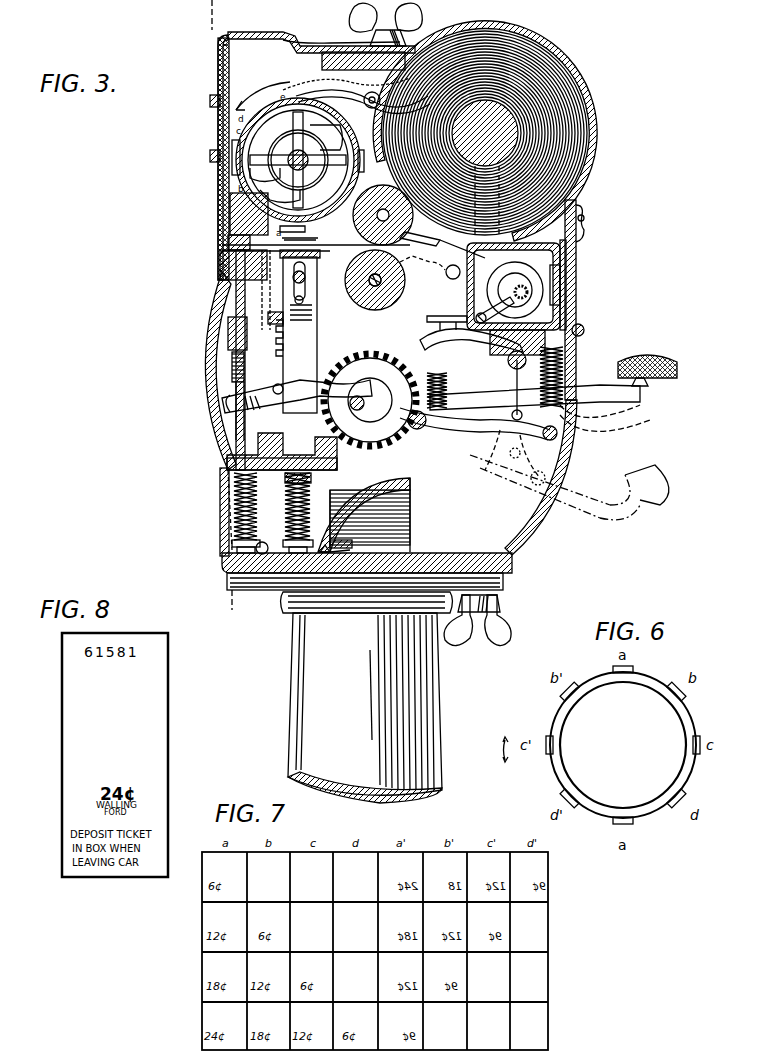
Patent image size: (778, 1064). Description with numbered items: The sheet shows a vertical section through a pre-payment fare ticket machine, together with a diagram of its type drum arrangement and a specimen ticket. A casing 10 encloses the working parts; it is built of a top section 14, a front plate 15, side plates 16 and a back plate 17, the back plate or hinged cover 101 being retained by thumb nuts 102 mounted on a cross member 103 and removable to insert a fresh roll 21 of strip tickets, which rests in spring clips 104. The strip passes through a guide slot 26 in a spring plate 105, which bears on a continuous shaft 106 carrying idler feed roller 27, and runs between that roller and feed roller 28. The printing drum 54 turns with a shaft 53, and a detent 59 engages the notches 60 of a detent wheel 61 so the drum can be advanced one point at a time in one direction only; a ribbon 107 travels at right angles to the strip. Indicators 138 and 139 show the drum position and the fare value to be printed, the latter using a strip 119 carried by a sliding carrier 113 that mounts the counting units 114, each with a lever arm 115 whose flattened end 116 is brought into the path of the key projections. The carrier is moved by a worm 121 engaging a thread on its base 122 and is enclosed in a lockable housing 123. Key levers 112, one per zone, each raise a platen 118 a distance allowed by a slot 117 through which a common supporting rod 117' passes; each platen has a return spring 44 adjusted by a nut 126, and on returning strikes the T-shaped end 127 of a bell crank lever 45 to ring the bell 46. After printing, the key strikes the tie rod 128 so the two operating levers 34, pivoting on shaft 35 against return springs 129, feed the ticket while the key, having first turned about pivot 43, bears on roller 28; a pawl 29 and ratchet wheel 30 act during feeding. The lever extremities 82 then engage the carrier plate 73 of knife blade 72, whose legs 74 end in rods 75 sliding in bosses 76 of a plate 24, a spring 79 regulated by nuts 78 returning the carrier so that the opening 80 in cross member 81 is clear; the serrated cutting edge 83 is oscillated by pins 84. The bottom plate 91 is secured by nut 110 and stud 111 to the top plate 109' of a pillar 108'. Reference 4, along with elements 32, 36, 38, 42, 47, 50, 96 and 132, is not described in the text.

The section line 4 is at (218, 305).
The casing 10 is at (220, 472).
The top section 14 is at (290, 34).
The front plate 15 is at (200, 323).
The side plates 16 is at (218, 46).
The back plate 17 is at (576, 350).
The roll 21 is at (588, 160).
The plate 24 is at (288, 485).
The guide slot 26 is at (442, 241).
The feed roller 27 is at (306, 229).
The feed roller 28 is at (441, 272).
The pawl 29 is at (297, 390).
The ratchet wheel 30 is at (368, 440).
The pinion 32 is at (369, 278).
The operating levers 34 is at (455, 433).
The shaft 35 is at (425, 430).
The spring 36 is at (432, 390).
The rack teeth 38 is at (276, 326).
The plate 42 is at (222, 245).
The pivot 43 is at (512, 457).
The spring 44 is at (310, 496).
The bell crank lever 45 is at (339, 529).
The bell 46 is at (445, 505).
The gear 47 is at (380, 445).
The ratchet disc 50 is at (365, 268).
The shaft 53 is at (236, 143).
The printing drum 54 is at (345, 142).
The detent 59 is at (372, 96).
The notch 60 is at (338, 145).
The detent wheel 61 is at (312, 95).
The knife blade 72 is at (232, 300).
The carrier plate 73 is at (230, 350).
The legs 74 is at (236, 378).
The rods 75 is at (228, 462).
The bosses 76 is at (232, 445).
The nuts 78 is at (232, 542).
The spring 79 is at (234, 500).
The opening 80 is at (220, 238).
The cross member 81 is at (225, 195).
The extremities 82 is at (222, 403).
The cutting edge 83 is at (222, 278).
The pins or rivets 84 is at (228, 330).
The bottom plate 91 is at (222, 562).
The cover strip 96 is at (315, 40).
The hinged cover 101 is at (586, 100).
The thumb nuts 102 is at (420, 16).
The cross member 103 is at (322, 62).
The spring clips 104 is at (518, 133).
The spring plate 105 is at (445, 262).
The continuous shaft 106 is at (383, 205).
The ribbon 107 is at (318, 239).
The pillar 108' is at (380, 708).
The top plate 109' is at (364, 595).
The nut 110 is at (512, 632).
The stud 111 is at (262, 545).
The key levers 112 is at (677, 366).
The sliding carrier 113 is at (582, 328).
The counting units 114 is at (505, 268).
The operating lever arm 115 is at (499, 303).
The flattened end 116 is at (471, 325).
The slot 117 is at (317, 281).
The common supporting rod 117' is at (279, 295).
The platens 118 is at (283, 303).
The strip 119 is at (565, 268).
The worm 121 is at (526, 405).
The base 122 is at (519, 385).
The housing 123 is at (585, 235).
The nut 126 is at (287, 530).
The T-shaped end 127 is at (278, 600).
The tie rod 128 is at (580, 455).
The return springs 129 is at (565, 370).
The block 132 is at (222, 222).
The indicator 138 is at (218, 127).
The indicator 139 is at (566, 292).